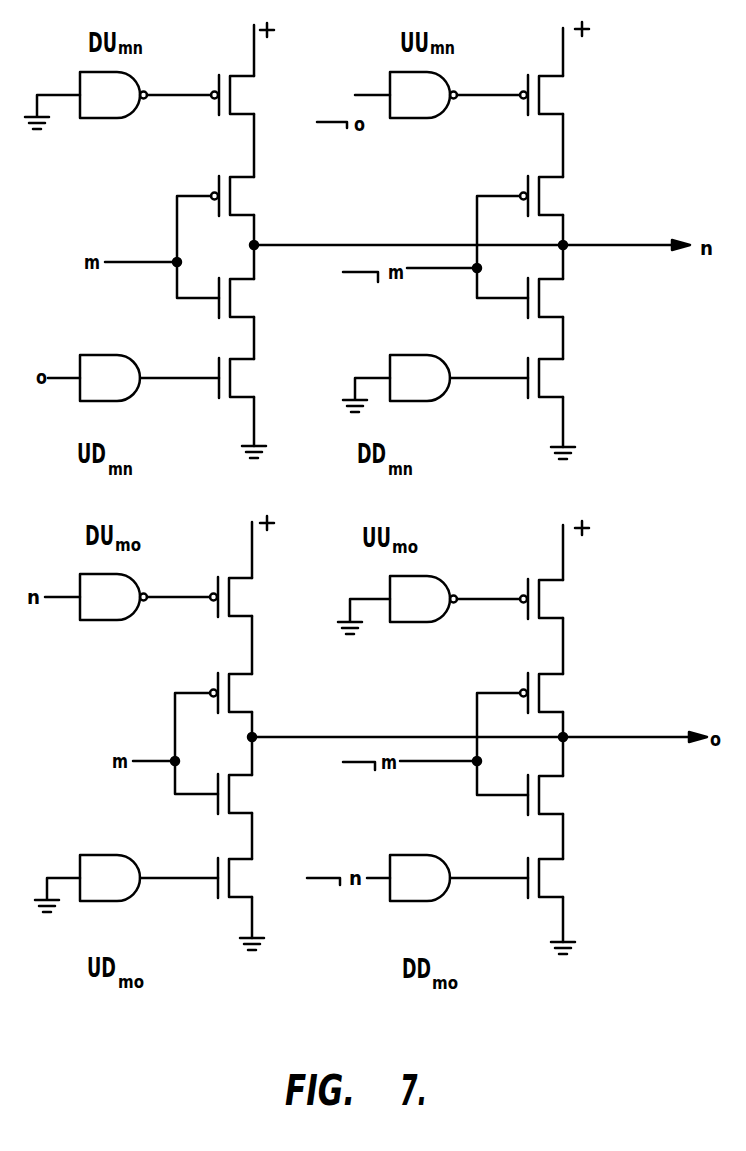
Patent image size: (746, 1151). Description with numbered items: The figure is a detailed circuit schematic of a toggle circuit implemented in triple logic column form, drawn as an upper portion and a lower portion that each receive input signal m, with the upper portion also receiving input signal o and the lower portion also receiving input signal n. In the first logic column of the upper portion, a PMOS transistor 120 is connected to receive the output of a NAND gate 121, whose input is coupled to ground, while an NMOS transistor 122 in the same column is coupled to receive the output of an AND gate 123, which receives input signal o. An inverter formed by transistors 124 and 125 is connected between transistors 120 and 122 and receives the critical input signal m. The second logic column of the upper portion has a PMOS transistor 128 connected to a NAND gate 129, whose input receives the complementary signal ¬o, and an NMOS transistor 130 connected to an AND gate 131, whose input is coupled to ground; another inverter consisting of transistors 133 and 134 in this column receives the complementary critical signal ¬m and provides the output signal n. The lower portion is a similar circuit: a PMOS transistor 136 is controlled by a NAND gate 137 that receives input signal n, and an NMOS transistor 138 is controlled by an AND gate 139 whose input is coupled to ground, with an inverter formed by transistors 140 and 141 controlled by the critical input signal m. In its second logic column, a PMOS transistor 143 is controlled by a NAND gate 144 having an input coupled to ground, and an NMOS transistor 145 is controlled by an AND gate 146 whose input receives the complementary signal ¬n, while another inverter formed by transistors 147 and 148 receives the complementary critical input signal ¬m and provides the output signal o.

The PMOS transistor 120 is at (248, 100).
The NAND gate 121 is at (110, 117).
The NMOS transistor 122 is at (248, 390).
The AND gate 123 is at (110, 401).
The transistor 124 is at (248, 203).
The transistor 125 is at (248, 300).
The PMOS transistor 128 is at (558, 103).
The NAND gate 129 is at (425, 117).
The NMOS transistor 130 is at (555, 389).
The AND gate 131 is at (425, 401).
The transistor 133 is at (555, 204).
The transistor 134 is at (558, 304).
The PMOS transistor 136 is at (245, 605).
The NAND gate 137 is at (117, 601).
The NMOS transistor 138 is at (245, 883).
The AND gate 139 is at (125, 901).
The transistor 140 is at (243, 701).
The transistor 141 is at (245, 787).
The PMOS transistor 143 is at (550, 601).
The NAND gate 144 is at (423, 620).
The NMOS transistor 145 is at (548, 882).
The AND gate 146 is at (438, 893).
The transistor 147 is at (545, 697).
The transistor 148 is at (552, 793).